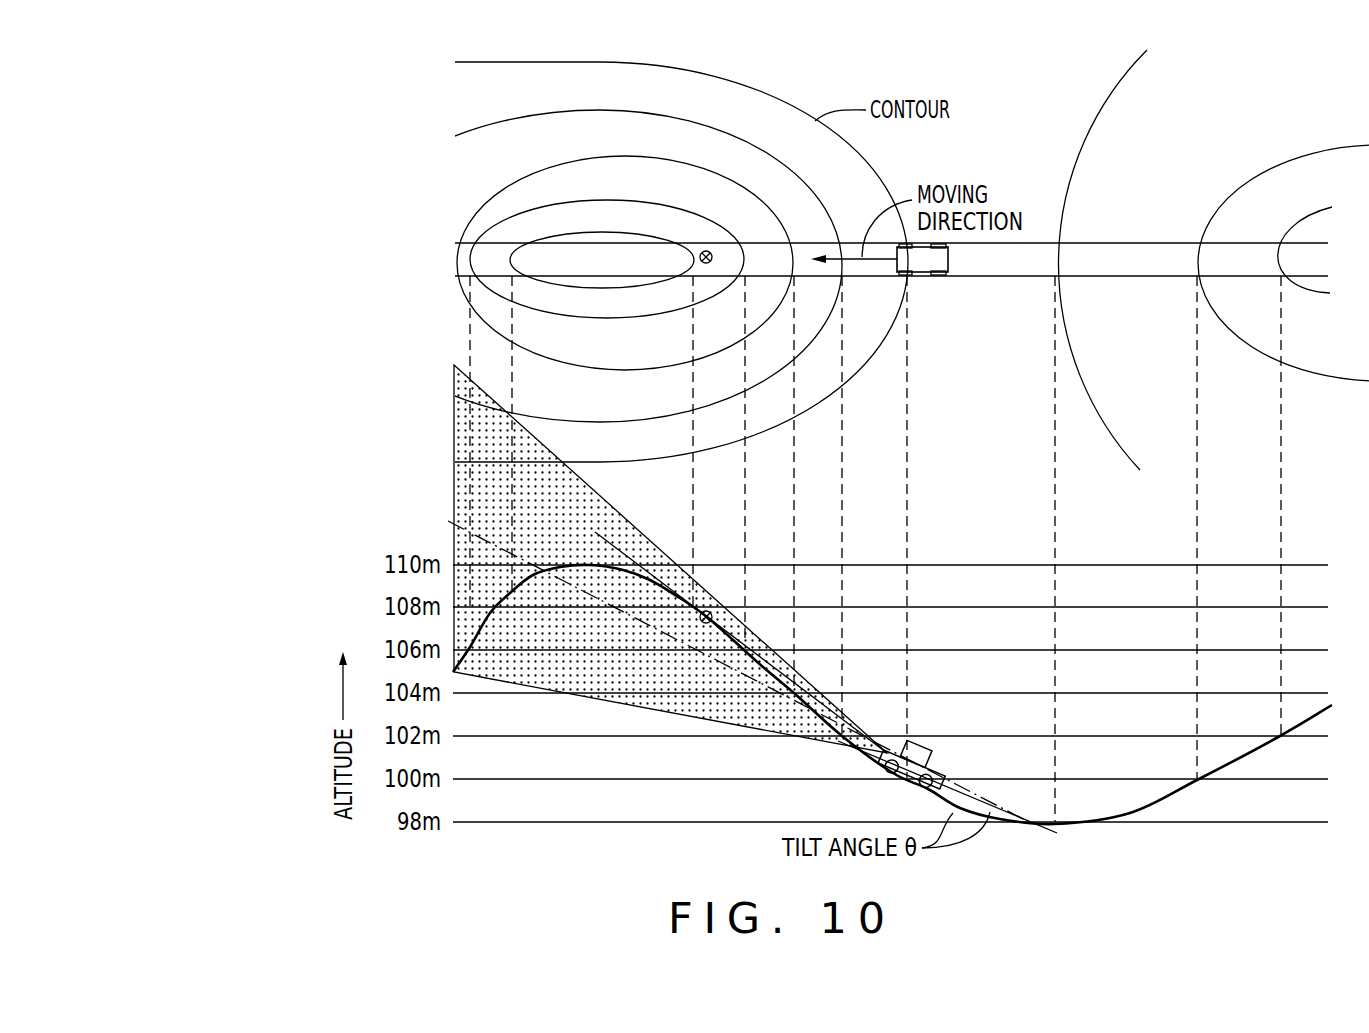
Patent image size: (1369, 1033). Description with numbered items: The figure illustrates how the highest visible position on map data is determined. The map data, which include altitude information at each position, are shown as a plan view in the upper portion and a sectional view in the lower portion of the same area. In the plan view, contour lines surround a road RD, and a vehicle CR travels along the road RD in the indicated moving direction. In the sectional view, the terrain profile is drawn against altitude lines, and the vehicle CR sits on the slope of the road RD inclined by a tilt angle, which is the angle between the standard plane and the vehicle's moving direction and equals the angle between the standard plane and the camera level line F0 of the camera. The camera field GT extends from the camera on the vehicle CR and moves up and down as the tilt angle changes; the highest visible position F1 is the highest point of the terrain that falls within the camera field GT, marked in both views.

The road RD is at (1093, 258).
The vehicle CR is at (920, 273).
The highest visible position F1 is at (712, 258).
The camera field GT is at (486, 443).
The camera level line F0 is at (448, 521).